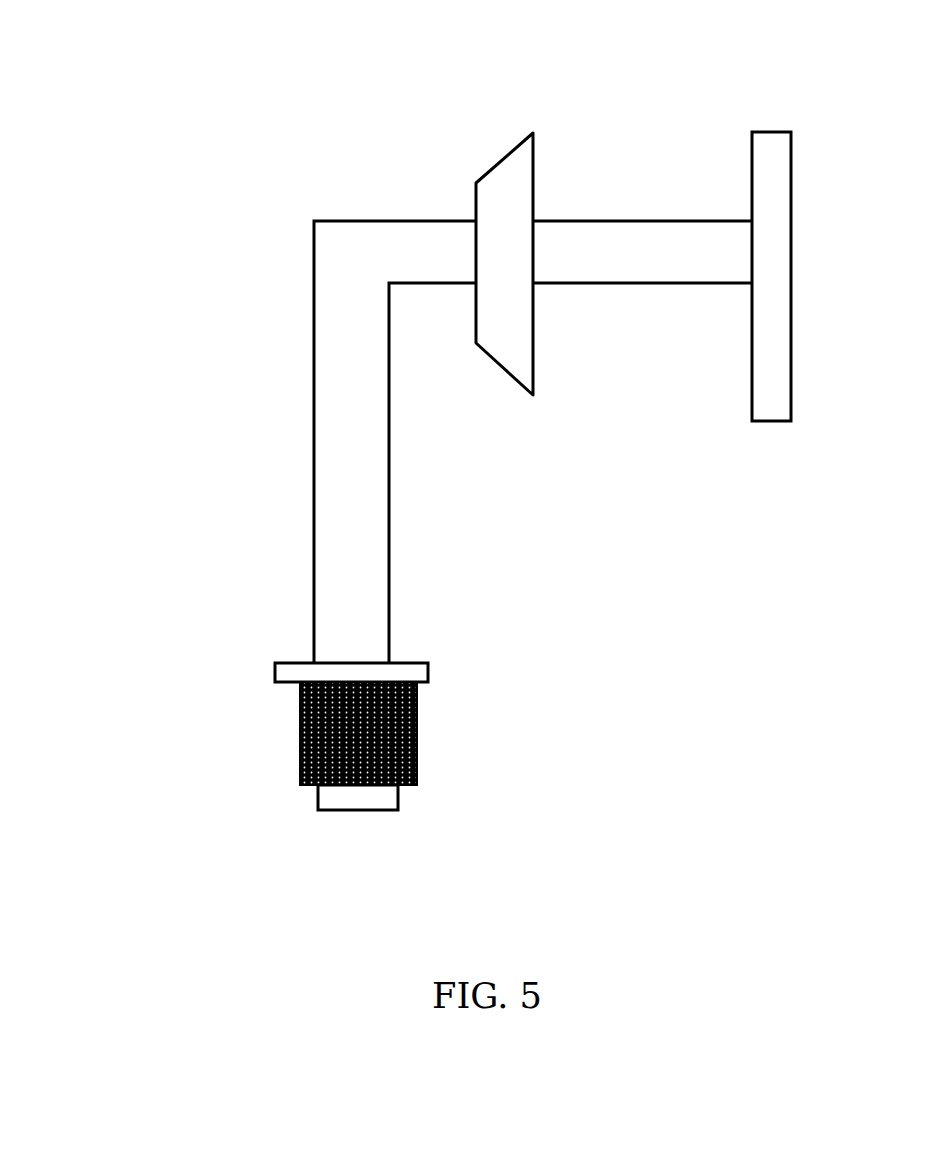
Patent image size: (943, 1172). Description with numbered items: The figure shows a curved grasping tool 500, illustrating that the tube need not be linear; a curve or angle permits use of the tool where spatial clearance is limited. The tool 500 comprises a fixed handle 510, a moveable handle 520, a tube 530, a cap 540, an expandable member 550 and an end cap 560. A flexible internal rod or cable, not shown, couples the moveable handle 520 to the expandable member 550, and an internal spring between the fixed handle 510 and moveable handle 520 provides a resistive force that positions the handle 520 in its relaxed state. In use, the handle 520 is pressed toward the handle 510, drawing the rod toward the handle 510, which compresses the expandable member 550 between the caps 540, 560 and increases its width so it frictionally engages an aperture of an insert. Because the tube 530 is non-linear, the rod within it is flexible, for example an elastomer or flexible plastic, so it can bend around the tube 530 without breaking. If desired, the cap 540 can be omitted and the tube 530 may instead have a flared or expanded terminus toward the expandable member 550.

The tool 500 is at (208, 130).
The fixed handle 510 is at (768, 148).
The moveable handle 520 is at (505, 155).
The tube 530 is at (332, 405).
The cap 540 is at (420, 672).
The expandable member 550 is at (415, 730).
The end cap 560 is at (390, 795).